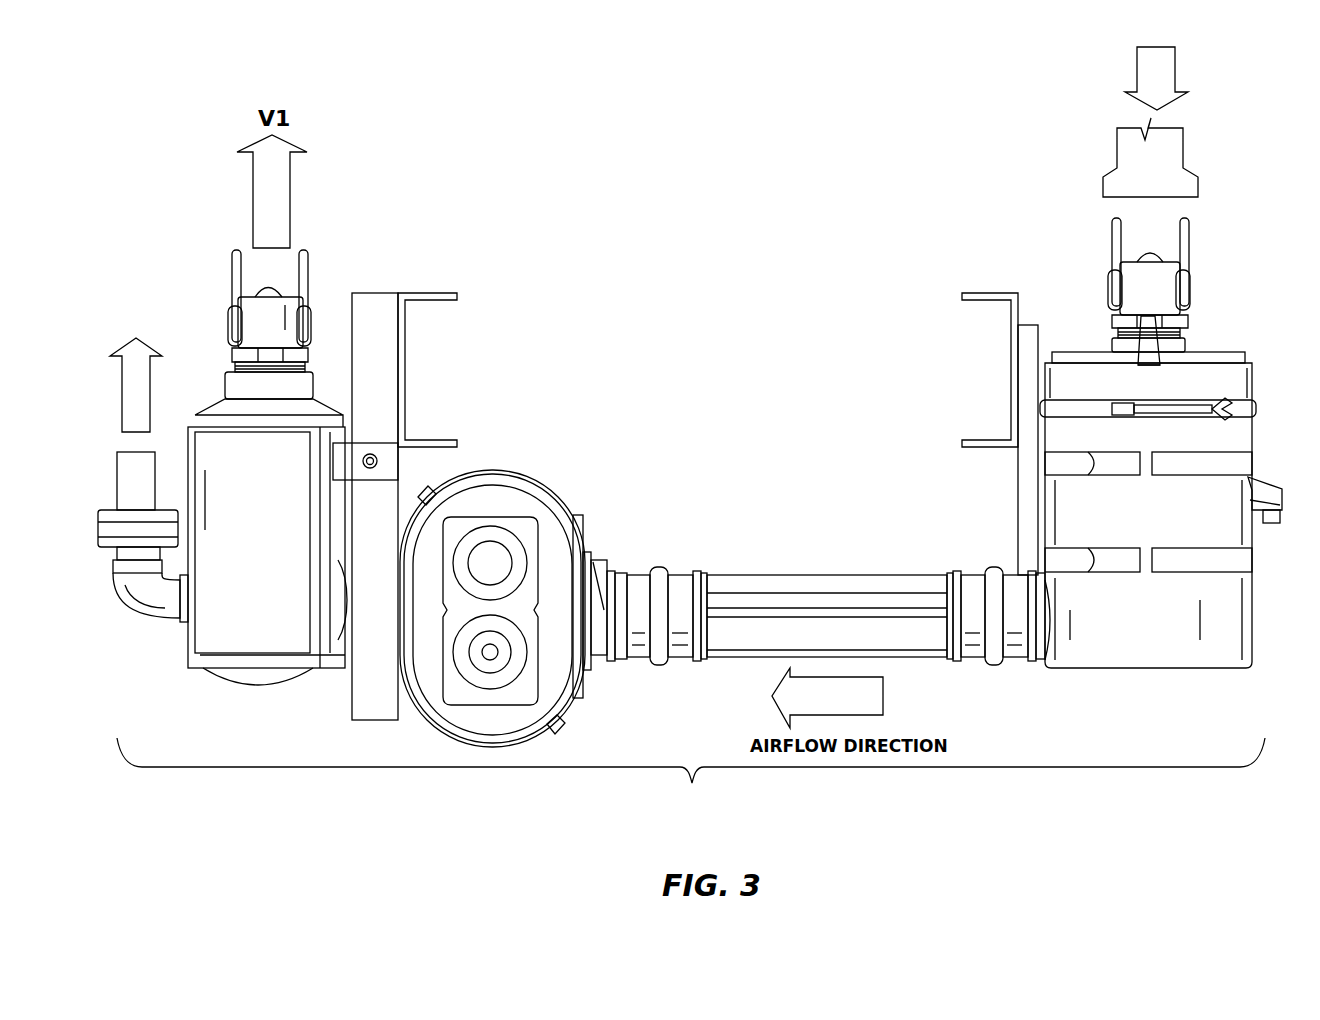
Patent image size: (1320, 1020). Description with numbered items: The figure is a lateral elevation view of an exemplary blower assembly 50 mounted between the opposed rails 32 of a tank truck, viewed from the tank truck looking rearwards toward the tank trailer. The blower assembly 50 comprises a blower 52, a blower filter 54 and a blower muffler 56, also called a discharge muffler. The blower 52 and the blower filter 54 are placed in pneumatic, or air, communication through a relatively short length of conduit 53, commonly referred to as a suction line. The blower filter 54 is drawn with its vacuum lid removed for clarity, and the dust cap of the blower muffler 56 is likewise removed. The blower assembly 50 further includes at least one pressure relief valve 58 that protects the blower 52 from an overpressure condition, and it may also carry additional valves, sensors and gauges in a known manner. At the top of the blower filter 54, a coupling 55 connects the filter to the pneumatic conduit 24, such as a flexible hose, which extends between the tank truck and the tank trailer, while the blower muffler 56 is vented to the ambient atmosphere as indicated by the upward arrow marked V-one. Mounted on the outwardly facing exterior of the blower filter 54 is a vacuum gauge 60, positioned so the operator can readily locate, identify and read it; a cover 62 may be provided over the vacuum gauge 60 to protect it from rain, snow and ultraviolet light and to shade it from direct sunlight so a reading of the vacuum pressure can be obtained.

The pneumatic conduit 24 is at (1117, 153).
The rails 32 is at (433, 293).
The blower assembly 50 is at (691, 777).
The blower 52 is at (525, 482).
The conduit 53 is at (805, 575).
The blower filter 54 is at (1142, 668).
The coupling 55 is at (1195, 287).
The blower muffler 56 is at (243, 690).
The pressure relief valve 58 is at (135, 600).
The vacuum gauge 60 is at (1272, 523).
The cover 62 is at (1272, 478).